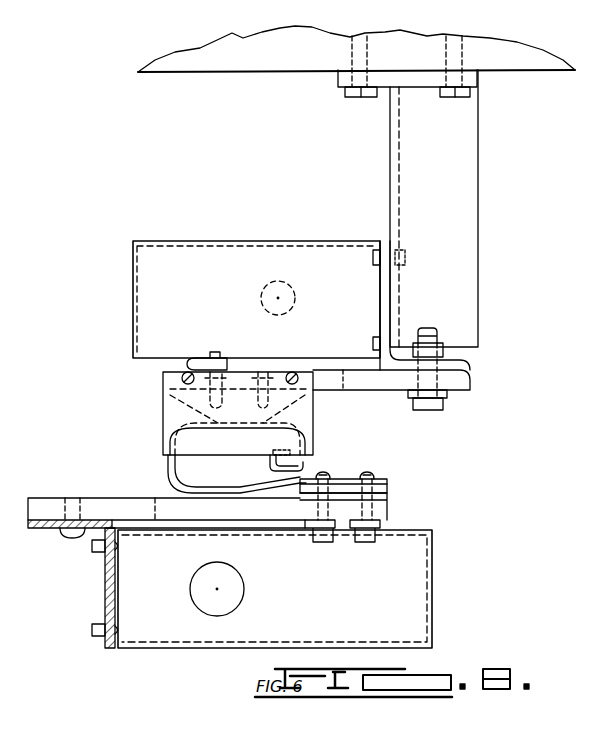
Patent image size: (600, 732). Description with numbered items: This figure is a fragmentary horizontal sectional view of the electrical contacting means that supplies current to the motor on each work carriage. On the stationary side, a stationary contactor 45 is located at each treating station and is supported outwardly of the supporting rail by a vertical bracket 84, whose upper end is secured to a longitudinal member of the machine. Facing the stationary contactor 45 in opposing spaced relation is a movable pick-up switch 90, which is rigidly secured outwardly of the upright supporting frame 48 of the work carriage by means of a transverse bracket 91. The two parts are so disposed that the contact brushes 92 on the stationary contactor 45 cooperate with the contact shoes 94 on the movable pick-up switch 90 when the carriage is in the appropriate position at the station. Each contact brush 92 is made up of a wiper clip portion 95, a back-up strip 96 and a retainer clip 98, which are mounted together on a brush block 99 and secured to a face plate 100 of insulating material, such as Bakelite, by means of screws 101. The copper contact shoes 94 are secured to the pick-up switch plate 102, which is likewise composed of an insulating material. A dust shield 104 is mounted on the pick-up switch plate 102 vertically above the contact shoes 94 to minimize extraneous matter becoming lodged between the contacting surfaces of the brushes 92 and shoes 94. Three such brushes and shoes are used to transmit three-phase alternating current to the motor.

The upright supporting frame 48 is at (262, 70).
The transverse bracket 91 is at (456, 181).
The pick-up switch 90 is at (228, 248).
The pick-up switch plate 102 is at (478, 383).
The dust shield 104 is at (313, 418).
The contact shoe 94 is at (170, 400).
The wiper clip portion 95 is at (168, 462).
The contact brush 92 is at (165, 475).
The retainer clip 98 is at (270, 471).
The screws 101 is at (368, 475).
The brush block 99 is at (390, 490).
The face plate 100 is at (388, 508).
The back-up strip 96 is at (234, 500).
The stationary contactor 45 is at (432, 545).
The vertical bracket 84 is at (105, 592).